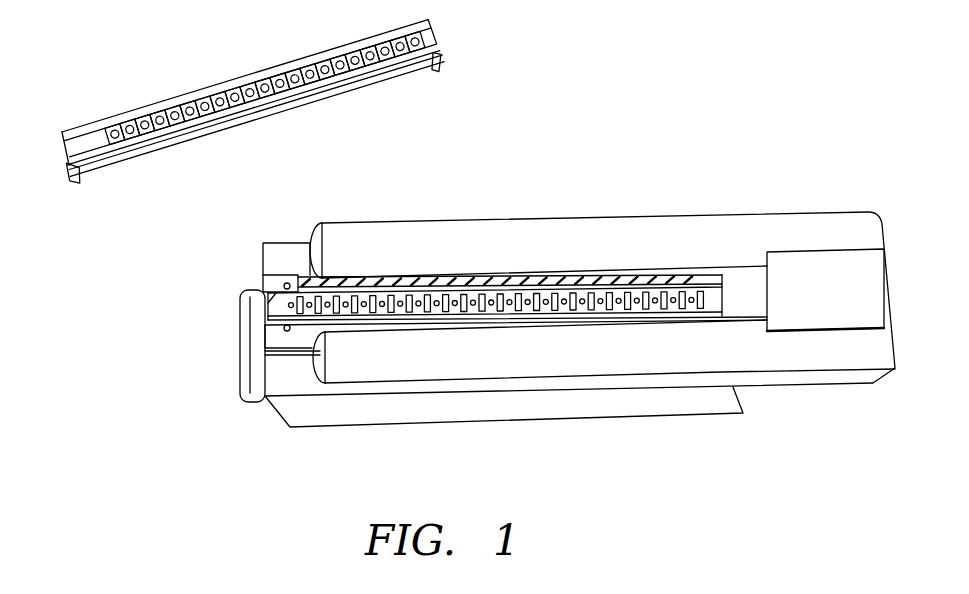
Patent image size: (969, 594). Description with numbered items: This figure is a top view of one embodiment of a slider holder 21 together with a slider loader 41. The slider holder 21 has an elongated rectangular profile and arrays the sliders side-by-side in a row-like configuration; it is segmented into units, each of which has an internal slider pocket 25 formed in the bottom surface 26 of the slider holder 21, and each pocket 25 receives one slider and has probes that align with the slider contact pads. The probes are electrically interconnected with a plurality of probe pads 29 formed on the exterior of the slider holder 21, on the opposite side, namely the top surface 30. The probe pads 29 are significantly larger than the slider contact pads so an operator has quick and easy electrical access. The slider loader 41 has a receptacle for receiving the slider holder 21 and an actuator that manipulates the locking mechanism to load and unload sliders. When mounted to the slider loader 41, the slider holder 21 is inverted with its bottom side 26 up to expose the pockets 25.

The slider holder 21 is at (447, 245).
The probe pads 29 is at (167, 118).
The top surface 30 is at (77, 143).
The bottom surface 26 is at (302, 331).
The slider pocket 25 is at (355, 297).
The slider loader 41 is at (757, 352).